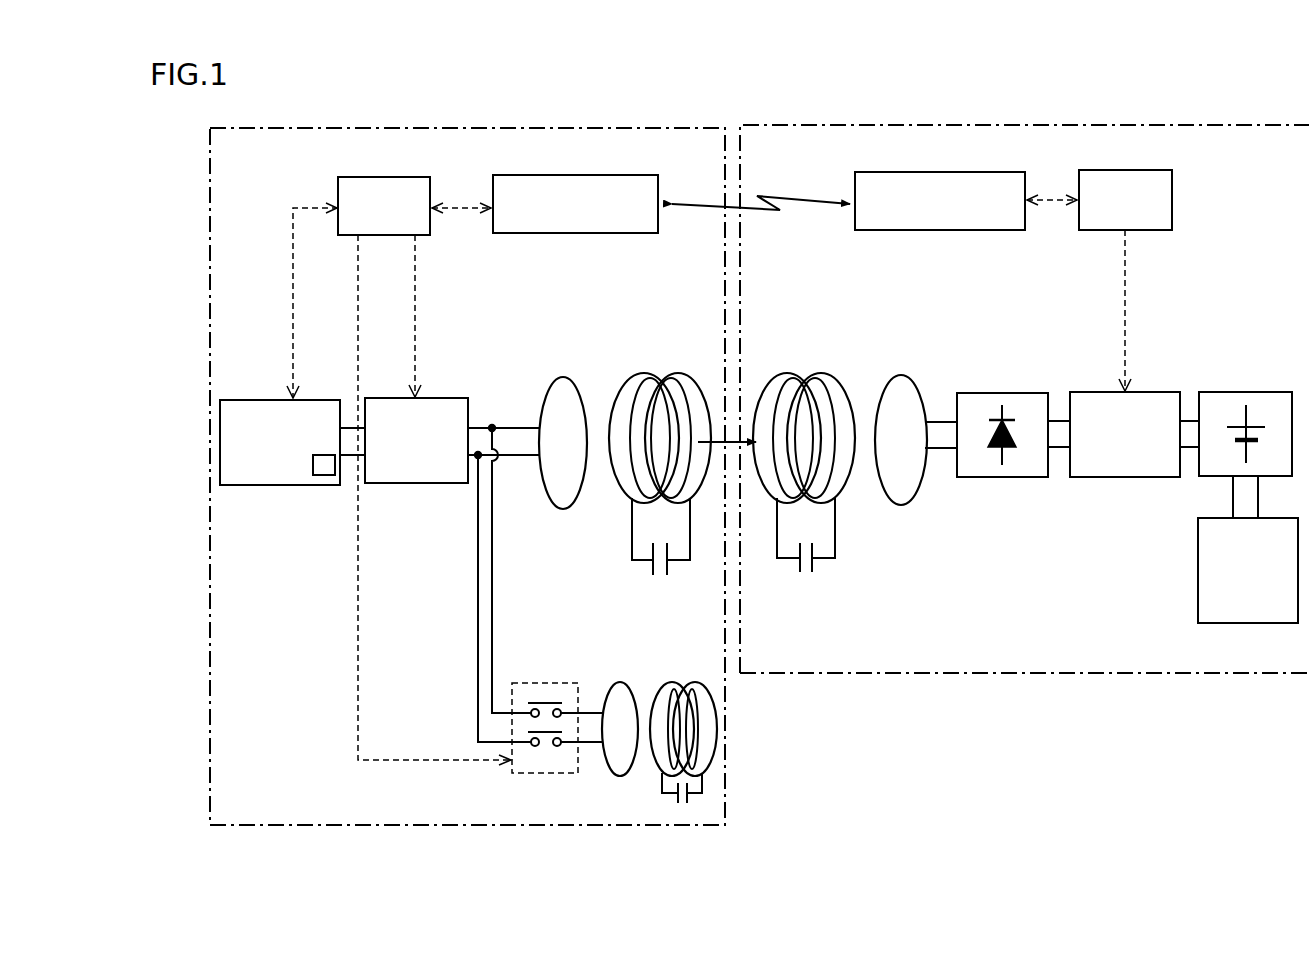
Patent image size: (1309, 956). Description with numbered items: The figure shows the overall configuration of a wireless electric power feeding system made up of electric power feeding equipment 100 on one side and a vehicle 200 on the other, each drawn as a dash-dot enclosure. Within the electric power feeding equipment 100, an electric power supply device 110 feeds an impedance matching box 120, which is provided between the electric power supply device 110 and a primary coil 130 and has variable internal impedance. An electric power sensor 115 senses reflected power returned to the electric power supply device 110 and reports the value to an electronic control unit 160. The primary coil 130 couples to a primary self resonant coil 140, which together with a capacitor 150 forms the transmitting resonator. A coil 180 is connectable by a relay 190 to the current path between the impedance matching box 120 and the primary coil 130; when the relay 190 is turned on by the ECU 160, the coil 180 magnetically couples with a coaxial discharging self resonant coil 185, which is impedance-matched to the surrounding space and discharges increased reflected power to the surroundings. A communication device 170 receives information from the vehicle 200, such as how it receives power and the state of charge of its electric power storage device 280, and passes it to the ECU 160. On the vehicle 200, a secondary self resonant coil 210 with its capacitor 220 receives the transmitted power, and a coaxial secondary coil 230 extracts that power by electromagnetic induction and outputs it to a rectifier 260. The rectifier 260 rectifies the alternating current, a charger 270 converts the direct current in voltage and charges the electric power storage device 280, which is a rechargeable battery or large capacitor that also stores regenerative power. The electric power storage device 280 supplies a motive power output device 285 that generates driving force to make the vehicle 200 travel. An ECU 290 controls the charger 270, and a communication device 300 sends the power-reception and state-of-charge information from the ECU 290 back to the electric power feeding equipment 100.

The electric power feeding equipment 100 is at (657, 128).
The electric power supply device 110 is at (323, 398).
The electric power sensor 115 is at (313, 467).
The impedance matching box 120 is at (418, 483).
The primary coil 130 is at (563, 509).
The primary self resonant coil 140 is at (657, 374).
The capacitor 150 is at (653, 568).
The electronic control unit (ECU) 160 is at (383, 177).
The communication device 170 is at (612, 175).
The coil 180 is at (619, 682).
The discharging self resonant coil 185 is at (681, 682).
The relay 190 is at (545, 683).
The vehicle 200 is at (1240, 125).
The secondary self resonant coil 210 is at (802, 372).
The capacitor 220 is at (812, 562).
The secondary coil 230 is at (901, 506).
The rectifier 260 is at (1002, 478).
The charger 270 is at (1125, 478).
The electric power storage device 280 is at (1246, 392).
The motive power output device 285 is at (1250, 623).
The ECU 290 is at (1127, 170).
The communication device 300 is at (982, 172).